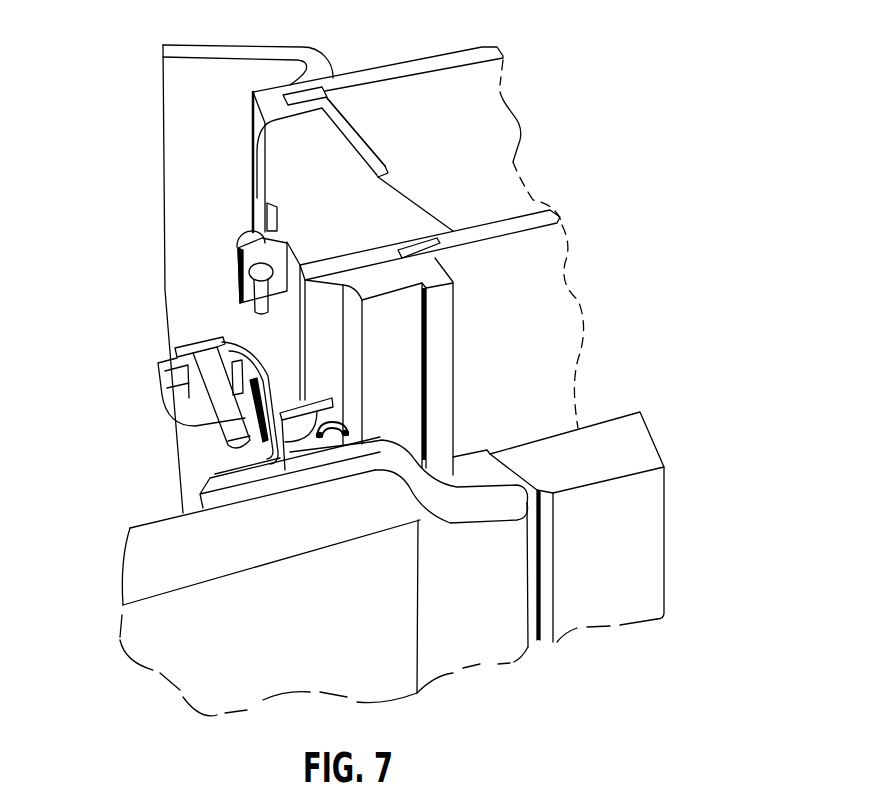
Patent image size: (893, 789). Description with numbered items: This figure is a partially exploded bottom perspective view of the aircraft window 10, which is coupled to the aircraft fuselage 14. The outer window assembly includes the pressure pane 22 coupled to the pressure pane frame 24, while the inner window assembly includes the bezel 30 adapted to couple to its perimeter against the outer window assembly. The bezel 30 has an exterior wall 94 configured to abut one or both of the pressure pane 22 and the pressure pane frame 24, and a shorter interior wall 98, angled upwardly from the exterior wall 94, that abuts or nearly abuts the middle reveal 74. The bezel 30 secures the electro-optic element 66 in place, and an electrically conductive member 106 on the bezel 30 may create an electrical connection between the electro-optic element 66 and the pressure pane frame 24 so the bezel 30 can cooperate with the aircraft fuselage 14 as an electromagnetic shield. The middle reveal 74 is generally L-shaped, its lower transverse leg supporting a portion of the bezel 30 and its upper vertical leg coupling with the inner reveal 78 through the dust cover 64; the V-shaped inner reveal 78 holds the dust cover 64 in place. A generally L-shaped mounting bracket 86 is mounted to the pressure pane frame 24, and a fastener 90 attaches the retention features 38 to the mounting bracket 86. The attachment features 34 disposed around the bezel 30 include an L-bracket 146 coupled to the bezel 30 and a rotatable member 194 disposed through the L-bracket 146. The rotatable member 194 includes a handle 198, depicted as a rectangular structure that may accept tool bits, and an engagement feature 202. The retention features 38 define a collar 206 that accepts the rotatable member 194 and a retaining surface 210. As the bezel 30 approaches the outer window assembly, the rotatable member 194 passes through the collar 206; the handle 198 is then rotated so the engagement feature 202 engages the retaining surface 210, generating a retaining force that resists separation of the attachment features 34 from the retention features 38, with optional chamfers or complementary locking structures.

The aircraft window 10 is at (690, 50).
The aircraft fuselage 14 is at (215, 680).
The pressure pane 22 is at (620, 592).
The pressure pane frame 24 is at (490, 627).
The bezel 30 is at (277, 155).
The attachment features 34 is at (215, 213).
The retention features 38 is at (365, 405).
The dust cover 64 is at (492, 123).
The electro-optic element 66 is at (543, 295).
The middle reveal 74 is at (353, 137).
The inner reveal 78 is at (245, 78).
The mounting bracket 86 is at (210, 476).
The fastener 90 is at (208, 340).
The exterior wall 94 is at (443, 337).
The interior wall 98 is at (423, 202).
The electrically conductive member 106 is at (453, 200).
The L-bracket 146 is at (265, 205).
The rotatable member 194 is at (206, 252).
The handle 198 is at (236, 228).
The engagement feature 202 is at (288, 297).
The collar 206 is at (335, 428).
The retaining surface 210 is at (303, 430).